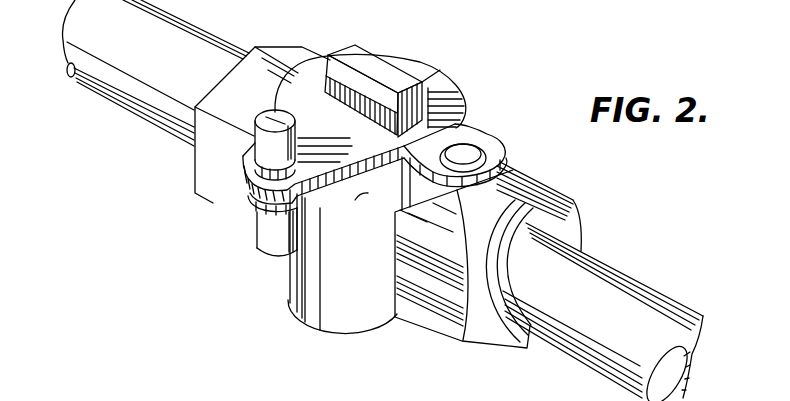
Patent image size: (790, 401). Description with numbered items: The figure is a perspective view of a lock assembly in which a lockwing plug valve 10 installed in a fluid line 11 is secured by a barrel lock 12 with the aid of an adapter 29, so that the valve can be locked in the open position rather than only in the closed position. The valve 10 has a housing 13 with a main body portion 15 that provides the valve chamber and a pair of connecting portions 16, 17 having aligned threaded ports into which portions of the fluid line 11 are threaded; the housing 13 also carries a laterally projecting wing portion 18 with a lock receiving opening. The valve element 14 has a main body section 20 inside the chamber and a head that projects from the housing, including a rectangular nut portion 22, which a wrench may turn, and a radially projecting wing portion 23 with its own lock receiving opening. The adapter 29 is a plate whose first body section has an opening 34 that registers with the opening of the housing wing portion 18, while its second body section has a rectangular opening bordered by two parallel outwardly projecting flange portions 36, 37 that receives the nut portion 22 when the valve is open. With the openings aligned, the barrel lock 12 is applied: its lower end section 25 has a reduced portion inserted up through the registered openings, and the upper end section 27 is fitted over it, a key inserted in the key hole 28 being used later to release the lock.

The lockwing plug valve 10 is at (402, 344).
The fluid line 11 is at (633, 272).
The barrel lock 12 is at (254, 250).
The housing 13 is at (297, 324).
The valve element 14 is at (429, 77).
The main body portion 15 is at (358, 322).
The connecting portion 16 is at (288, 44).
The connecting portion 17 is at (580, 226).
The wing portion 18 is at (253, 204).
The main body section 20 is at (424, 90).
The nut portion 22 is at (345, 52).
The wing portion 23 is at (464, 133).
The end section 25 is at (272, 258).
The end section 27 is at (254, 144).
The key hole 28 is at (256, 127).
The adapter 29 is at (240, 177).
The opening 34 is at (307, 197).
The flange portion 36 is at (451, 103).
The flange portion 37 is at (326, 94).